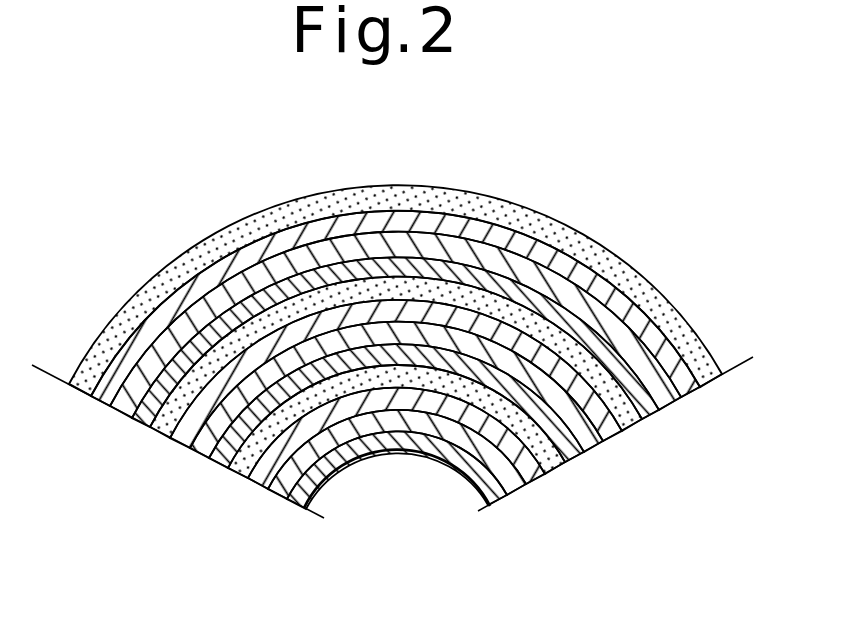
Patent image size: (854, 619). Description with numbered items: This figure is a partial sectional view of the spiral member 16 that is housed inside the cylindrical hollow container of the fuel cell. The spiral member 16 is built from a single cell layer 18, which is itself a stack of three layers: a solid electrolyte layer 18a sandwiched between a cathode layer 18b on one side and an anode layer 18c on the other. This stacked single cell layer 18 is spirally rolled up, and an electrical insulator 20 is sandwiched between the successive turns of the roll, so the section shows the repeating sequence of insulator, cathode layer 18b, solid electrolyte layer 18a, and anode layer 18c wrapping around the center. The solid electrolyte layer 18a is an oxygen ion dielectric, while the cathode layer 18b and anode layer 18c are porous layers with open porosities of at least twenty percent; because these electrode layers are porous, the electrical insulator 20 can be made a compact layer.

The spiral member 16 is at (492, 135).
The single cell layer 18 is at (441, 389).
The solid electrolyte layer 18a is at (207, 440).
The cathode layer 18b is at (180, 432).
The anode layer 18c is at (222, 465).
The electrical insulator 20 is at (335, 297).